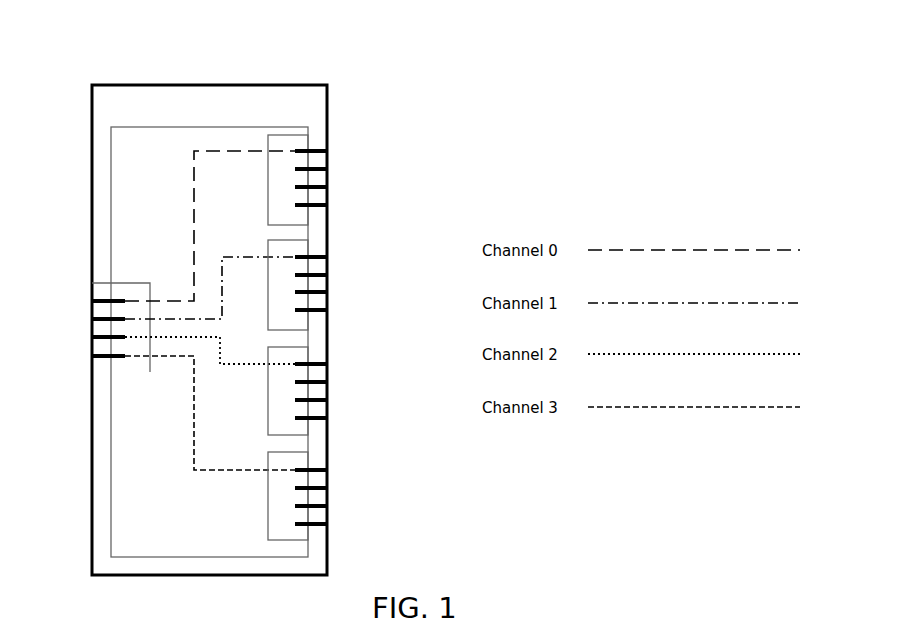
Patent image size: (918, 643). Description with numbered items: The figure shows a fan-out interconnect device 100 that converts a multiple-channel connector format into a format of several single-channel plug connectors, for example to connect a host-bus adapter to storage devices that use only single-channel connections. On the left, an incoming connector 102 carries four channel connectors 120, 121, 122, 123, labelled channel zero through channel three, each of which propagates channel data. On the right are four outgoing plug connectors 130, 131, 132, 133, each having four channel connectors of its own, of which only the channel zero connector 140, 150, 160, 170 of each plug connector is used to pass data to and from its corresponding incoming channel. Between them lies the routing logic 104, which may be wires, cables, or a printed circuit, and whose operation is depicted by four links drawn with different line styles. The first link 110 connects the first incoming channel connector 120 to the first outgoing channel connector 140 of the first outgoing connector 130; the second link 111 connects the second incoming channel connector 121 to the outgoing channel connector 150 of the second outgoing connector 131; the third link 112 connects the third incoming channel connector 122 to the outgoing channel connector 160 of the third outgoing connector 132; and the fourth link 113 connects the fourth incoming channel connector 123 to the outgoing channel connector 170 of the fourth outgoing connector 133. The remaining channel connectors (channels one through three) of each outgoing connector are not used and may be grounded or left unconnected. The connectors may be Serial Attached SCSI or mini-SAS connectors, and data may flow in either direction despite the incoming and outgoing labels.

The fan-out interconnect device 100 is at (143, 85).
The incoming connector 102 is at (103, 284).
The routing logic 104 is at (225, 127).
The first link 110 is at (194, 192).
The second link 111 is at (258, 256).
The third link 112 is at (249, 366).
The fourth link 113 is at (193, 418).
The first incoming channel connector 120 is at (92, 300).
The second incoming channel connector 121 is at (92, 318).
The third incoming channel connector 122 is at (92, 336).
The fourth incoming channel connector 123 is at (92, 355).
The first outgoing plug connector 130 is at (315, 134).
The second outgoing plug connector 131 is at (315, 240).
The third outgoing plug connector 132 is at (315, 346).
The fourth outgoing plug connector 133 is at (315, 452).
The first outgoing channel connector 140 is at (328, 152).
The first outgoing channel connector of second plug connector 150 is at (328, 258).
The first outgoing channel connector of third plug connector 160 is at (328, 365).
The first outgoing channel connector of fourth plug connector 170 is at (328, 471).